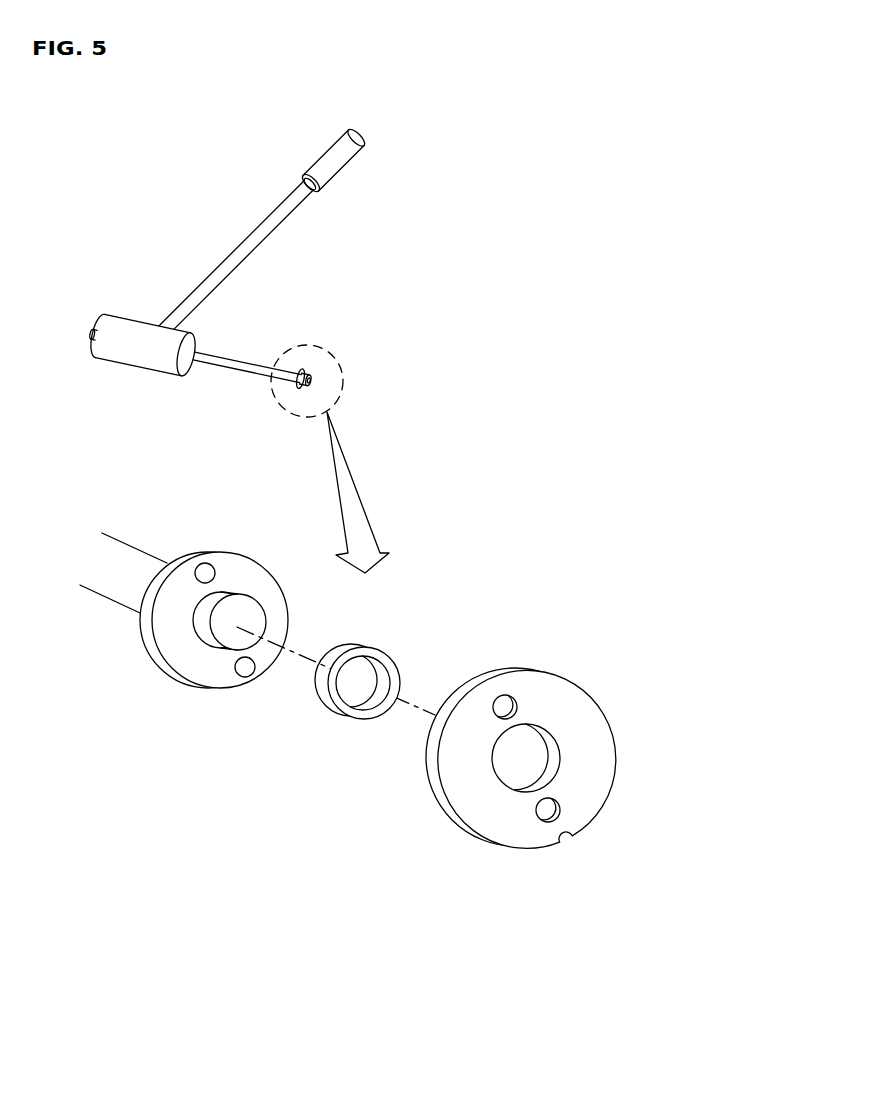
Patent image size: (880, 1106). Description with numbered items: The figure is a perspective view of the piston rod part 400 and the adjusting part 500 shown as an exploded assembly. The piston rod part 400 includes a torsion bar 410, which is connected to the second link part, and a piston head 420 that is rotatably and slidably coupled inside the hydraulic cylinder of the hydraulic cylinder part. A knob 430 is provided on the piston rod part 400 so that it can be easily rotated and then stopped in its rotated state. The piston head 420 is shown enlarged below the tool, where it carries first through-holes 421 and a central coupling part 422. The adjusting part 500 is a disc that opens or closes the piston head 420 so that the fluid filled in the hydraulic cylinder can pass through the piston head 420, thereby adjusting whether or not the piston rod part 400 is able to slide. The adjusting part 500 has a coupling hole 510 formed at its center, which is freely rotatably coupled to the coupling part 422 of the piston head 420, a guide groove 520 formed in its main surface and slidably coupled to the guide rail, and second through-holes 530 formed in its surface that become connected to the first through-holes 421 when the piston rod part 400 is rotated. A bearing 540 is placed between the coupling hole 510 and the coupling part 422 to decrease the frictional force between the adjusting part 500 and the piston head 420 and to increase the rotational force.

The piston rod part 400 is at (196, 211).
The torsion bar 410 is at (130, 355).
The piston head 420 is at (293, 390).
The first through-holes 421 is at (245, 677).
The coupling part 422 is at (253, 618).
The knob 430 is at (328, 158).
The adjusting part 500 is at (567, 690).
The coupling hole 510 is at (553, 755).
The guide groove 520 is at (563, 837).
The second through-holes 530 is at (503, 698).
The bearing 540 is at (328, 702).